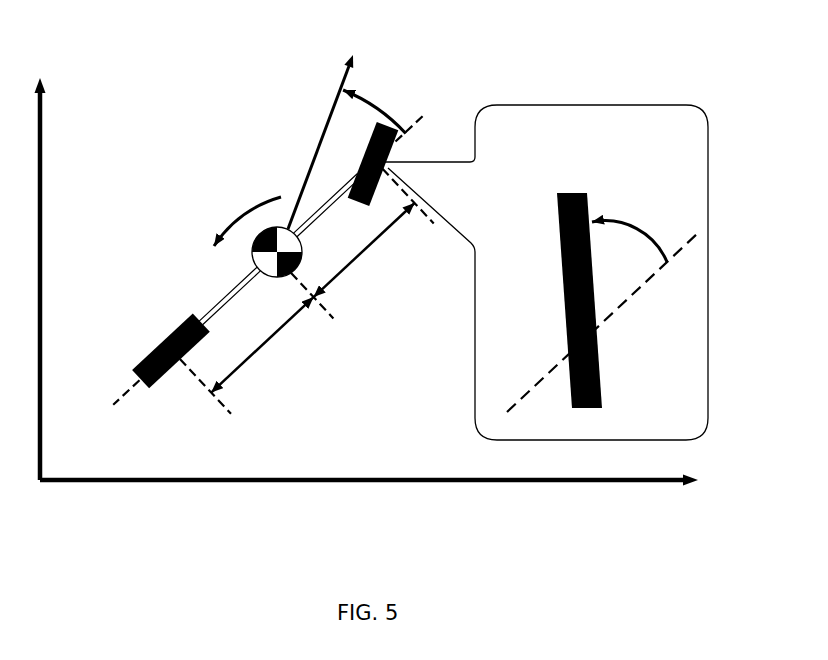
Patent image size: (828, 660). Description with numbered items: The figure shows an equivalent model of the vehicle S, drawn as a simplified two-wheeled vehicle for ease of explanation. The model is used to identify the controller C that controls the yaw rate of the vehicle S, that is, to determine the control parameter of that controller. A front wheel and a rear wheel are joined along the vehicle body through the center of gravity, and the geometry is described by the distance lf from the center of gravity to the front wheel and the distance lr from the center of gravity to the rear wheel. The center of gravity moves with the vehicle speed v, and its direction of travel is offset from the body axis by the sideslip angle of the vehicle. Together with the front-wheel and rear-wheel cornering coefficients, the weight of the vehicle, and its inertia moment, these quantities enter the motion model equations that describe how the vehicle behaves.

The vehicle speed v is at (324, 127).
The distance from the center of gravity to the rear wheel lr is at (262, 345).
The distance from the center of gravity to the front wheel lf is at (364, 250).